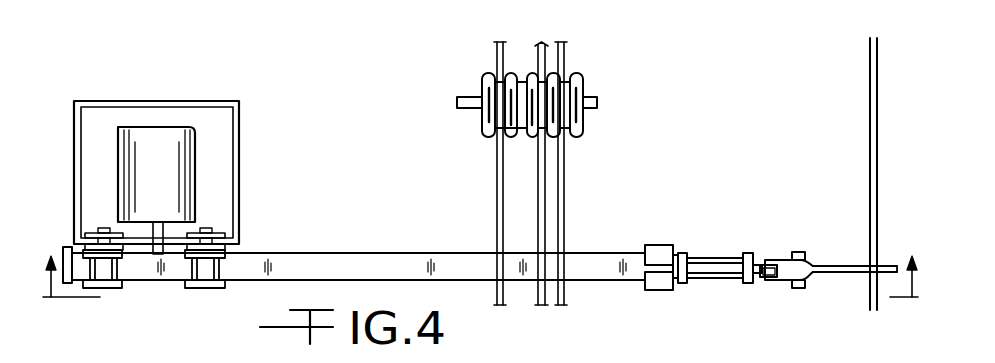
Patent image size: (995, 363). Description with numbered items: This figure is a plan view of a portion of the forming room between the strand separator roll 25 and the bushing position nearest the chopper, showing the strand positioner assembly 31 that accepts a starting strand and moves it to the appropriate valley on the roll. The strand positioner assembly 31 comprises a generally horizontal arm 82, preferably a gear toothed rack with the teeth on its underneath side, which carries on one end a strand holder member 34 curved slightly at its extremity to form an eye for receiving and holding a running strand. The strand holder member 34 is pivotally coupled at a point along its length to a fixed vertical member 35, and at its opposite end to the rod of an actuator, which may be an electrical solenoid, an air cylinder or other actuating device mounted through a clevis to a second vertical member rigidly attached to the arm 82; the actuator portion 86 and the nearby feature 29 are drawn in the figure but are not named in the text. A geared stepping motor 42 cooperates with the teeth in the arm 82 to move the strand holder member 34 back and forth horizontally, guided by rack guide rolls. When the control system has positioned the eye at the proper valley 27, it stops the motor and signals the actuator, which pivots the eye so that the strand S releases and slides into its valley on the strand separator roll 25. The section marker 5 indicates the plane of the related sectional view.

The strand positioner assembly 31 is at (178, 94).
The geared stepping motor 42 is at (195, 165).
The arm 82 is at (308, 253).
The strand separator roll 25 is at (482, 90).
The valley 27 is at (521, 83).
The pulley groove 29 is at (511, 132).
The actuator cylinder 86 is at (717, 257).
The fixed vertical member 35 is at (800, 252).
The strand holder member 34 is at (845, 266).
The strand S is at (877, 97).
The section line 5- 5 is at (481, 261).